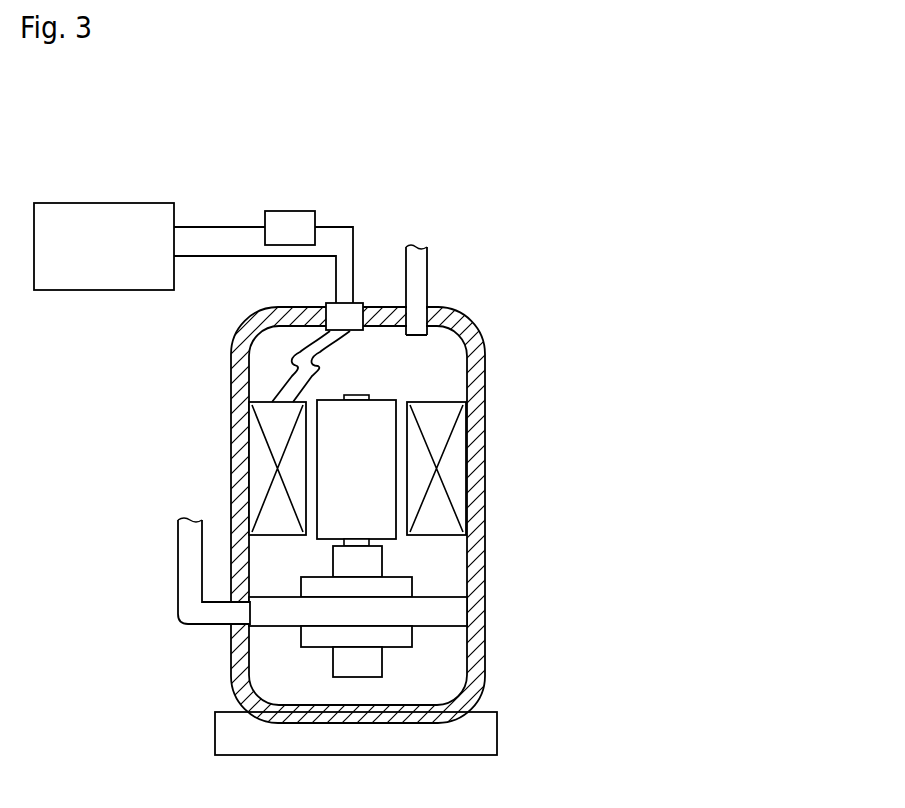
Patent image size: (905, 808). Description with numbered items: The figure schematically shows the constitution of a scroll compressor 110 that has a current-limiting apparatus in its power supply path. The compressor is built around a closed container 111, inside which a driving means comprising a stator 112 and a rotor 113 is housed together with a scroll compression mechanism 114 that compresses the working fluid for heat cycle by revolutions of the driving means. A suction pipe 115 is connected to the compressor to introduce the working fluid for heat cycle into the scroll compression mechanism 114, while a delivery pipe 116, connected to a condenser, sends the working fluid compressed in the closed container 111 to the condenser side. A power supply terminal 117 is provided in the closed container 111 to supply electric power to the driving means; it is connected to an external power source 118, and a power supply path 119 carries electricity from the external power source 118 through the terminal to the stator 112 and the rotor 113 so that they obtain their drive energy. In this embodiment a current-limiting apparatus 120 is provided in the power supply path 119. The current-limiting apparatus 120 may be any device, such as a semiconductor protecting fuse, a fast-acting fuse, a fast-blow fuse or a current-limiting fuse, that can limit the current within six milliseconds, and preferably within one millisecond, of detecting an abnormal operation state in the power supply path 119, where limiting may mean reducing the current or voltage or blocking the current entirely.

The scroll compressor 110 is at (560, 101).
The closed container 111 is at (487, 375).
The stator 112 is at (457, 458).
The rotor 113 is at (392, 538).
The scroll compression mechanism 114 is at (457, 612).
The suction pipe 115 is at (177, 550).
The delivery pipe 116 is at (428, 273).
The power supply terminal 117 is at (360, 300).
The external power source 118 is at (98, 202).
The power supply path 119 is at (223, 225).
The current-limiting apparatus 120 is at (290, 210).